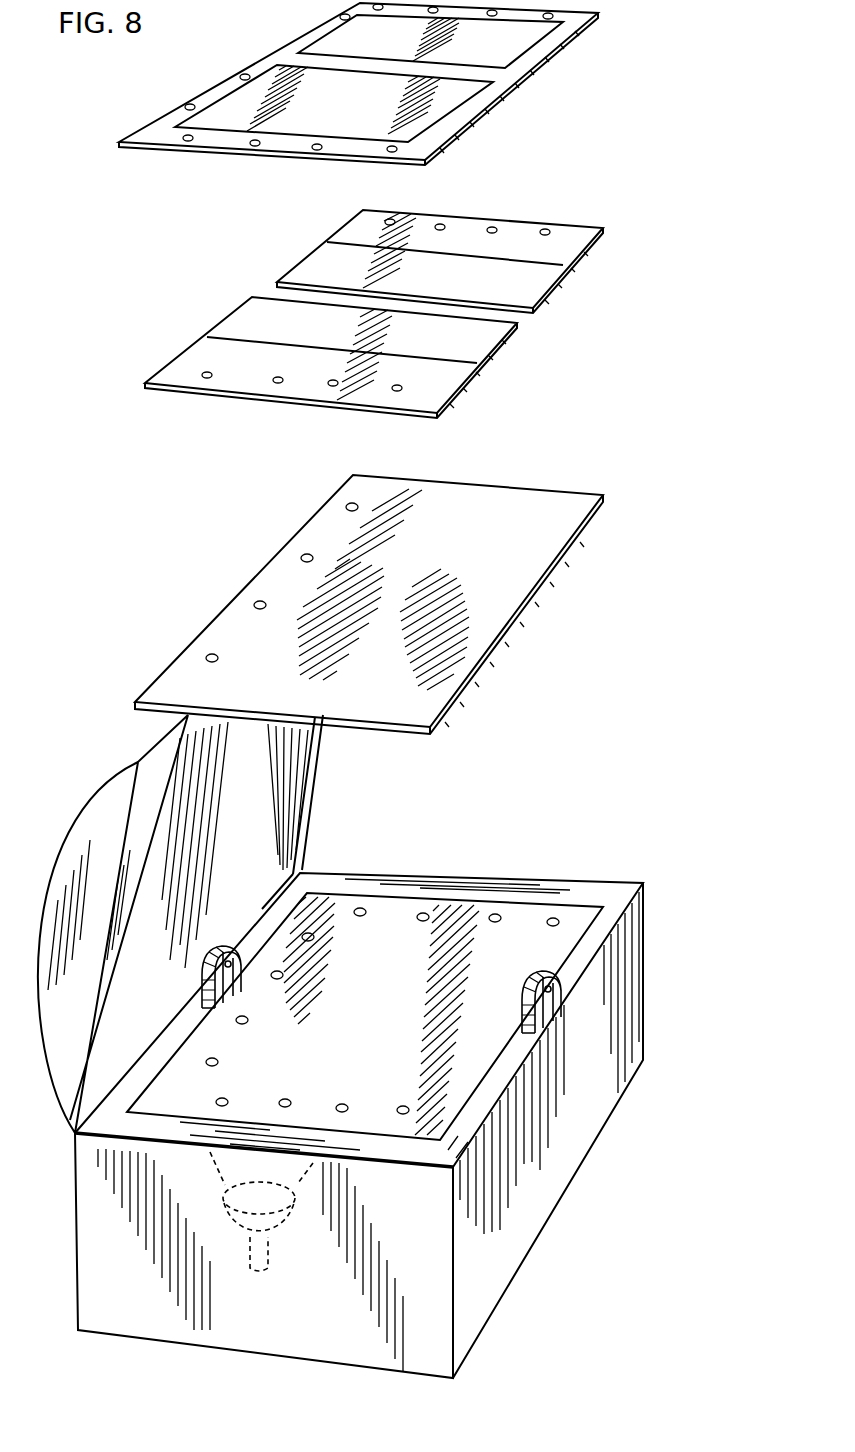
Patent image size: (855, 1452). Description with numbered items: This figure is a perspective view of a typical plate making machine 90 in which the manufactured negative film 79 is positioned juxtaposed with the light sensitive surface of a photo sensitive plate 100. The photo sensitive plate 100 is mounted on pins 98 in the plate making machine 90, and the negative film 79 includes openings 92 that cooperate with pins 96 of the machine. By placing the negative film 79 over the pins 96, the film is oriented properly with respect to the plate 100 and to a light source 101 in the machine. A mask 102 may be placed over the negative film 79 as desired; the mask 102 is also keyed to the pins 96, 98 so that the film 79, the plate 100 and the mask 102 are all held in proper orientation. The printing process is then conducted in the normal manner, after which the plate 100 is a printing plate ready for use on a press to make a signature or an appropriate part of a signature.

The negative film 79 is at (565, 265).
The plate making machine 90 is at (635, 967).
The openings 92 is at (395, 219).
The pins 96 is at (363, 916).
The pins 98 is at (310, 941).
The photo sensitive plate 100 is at (530, 595).
The light source 101 is at (290, 1217).
The mask 102 is at (513, 92).